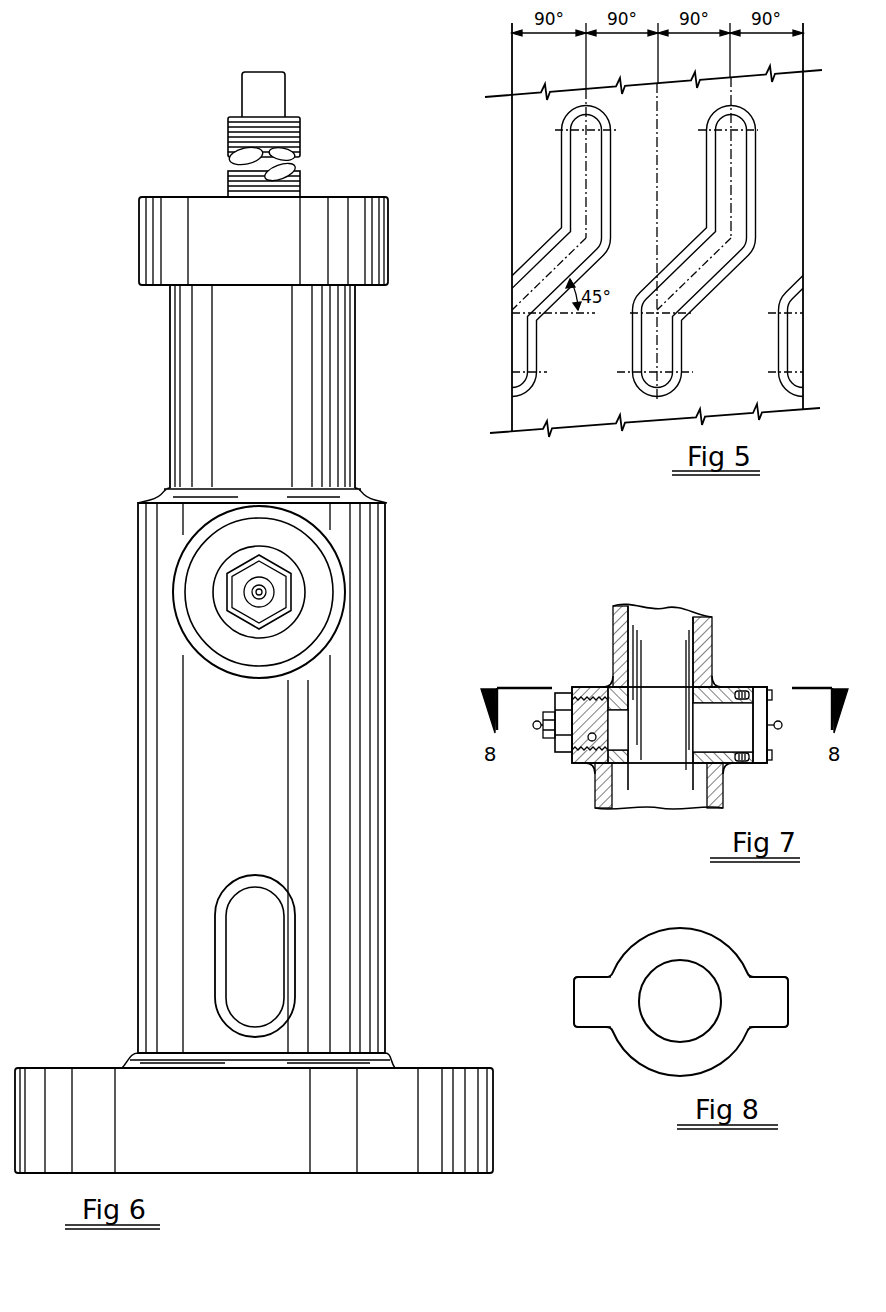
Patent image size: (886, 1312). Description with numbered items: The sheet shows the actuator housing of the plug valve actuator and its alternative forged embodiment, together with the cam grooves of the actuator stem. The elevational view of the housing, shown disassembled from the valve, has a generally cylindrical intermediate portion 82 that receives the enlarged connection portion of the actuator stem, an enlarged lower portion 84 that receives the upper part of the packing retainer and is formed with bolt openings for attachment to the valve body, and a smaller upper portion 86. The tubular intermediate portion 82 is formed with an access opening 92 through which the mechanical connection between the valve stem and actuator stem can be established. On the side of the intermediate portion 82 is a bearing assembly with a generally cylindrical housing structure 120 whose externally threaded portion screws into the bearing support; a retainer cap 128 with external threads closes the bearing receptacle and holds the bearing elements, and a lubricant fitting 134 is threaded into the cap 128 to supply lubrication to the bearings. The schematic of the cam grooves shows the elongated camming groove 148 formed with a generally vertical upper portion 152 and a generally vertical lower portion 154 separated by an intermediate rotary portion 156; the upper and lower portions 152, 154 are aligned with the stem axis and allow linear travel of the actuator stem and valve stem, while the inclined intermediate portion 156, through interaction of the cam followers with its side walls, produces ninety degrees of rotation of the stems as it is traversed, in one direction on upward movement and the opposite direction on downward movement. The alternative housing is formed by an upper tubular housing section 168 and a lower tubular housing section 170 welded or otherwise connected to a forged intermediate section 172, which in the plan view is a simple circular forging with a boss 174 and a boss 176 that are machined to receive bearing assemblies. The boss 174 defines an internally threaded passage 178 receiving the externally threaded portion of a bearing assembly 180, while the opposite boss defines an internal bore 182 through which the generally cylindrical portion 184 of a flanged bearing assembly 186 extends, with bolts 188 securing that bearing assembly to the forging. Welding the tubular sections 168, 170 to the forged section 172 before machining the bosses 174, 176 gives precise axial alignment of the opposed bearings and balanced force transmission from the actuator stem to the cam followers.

In FIG. 6, the intermediate portion 82 is at (170, 788).
In FIG. 6, the enlarged lower portion 84 is at (57, 1080).
In FIG. 6, the smaller upper portion 86 is at (205, 362).
In FIG. 6, the access opening 92 is at (222, 908).
In FIG. 6, the cylindrical housing structure 120 is at (208, 560).
In FIG. 6, the retainer cap 128 is at (238, 580).
In FIG. 6, the lubricant fitting 134 is at (253, 600).
In FIG. 5, the camming groove 148 is at (577, 150).
In FIG. 5, the upper portion 152 is at (567, 190).
In FIG. 5, the lower portion 154 is at (512, 343).
In FIG. 5, the intermediate rotary portion 156 is at (541, 241).
In FIG. 7, the upper tubular housing section 168 is at (622, 625).
In FIG. 7, the lower tubular housing section 170 is at (600, 792).
In FIG. 7, the forged intermediate section 172 is at (723, 697).
In FIG. 8, the forged intermediate section 172 is at (646, 950).
In FIG. 7, the boss 174 is at (595, 690).
In FIG. 8, the boss 174 is at (588, 987).
In FIG. 8, the boss 176 is at (760, 990).
In FIG. 7, the internally threaded passage 178 is at (590, 741).
In FIG. 7, the bearing assembly 180 is at (560, 748).
In FIG. 7, the internal bore 182 is at (717, 743).
In FIG. 7, the cylindrical portion 184 is at (705, 730).
In FIG. 7, the flanged bearing assembly 186 is at (758, 713).
In FIG. 7, the bolts 188 is at (767, 760).